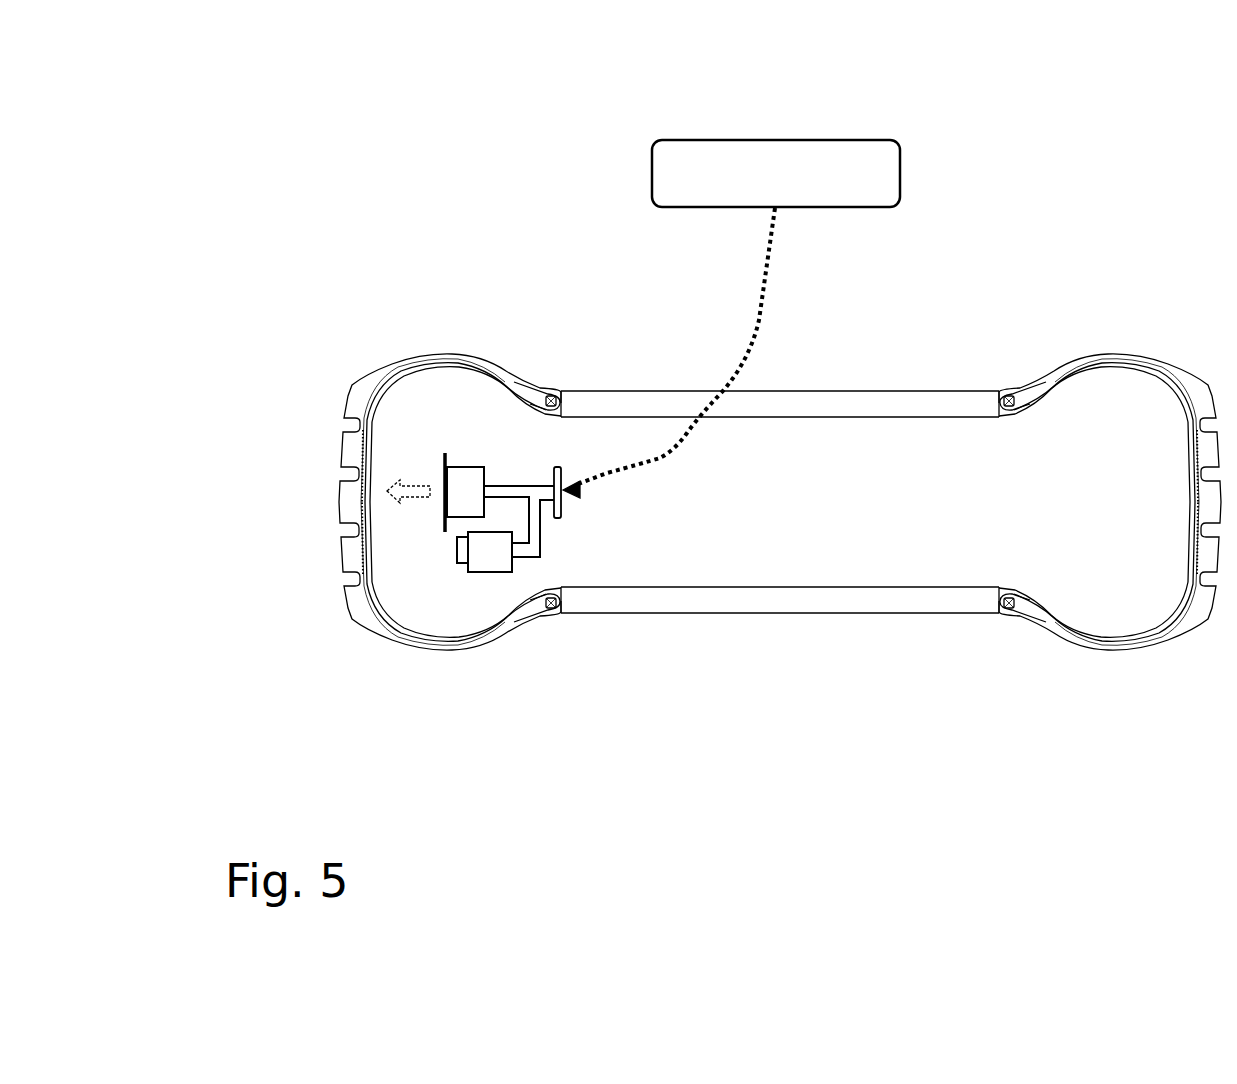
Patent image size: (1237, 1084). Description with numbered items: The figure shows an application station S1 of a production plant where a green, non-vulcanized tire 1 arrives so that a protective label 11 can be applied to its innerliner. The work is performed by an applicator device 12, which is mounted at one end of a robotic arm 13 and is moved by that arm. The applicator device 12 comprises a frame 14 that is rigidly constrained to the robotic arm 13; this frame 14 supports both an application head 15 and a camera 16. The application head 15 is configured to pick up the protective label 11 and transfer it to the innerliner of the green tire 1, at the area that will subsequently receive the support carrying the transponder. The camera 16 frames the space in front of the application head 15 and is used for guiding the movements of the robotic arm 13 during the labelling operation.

The tire 1 is at (834, 661).
The protective label 11 is at (445, 452).
The applicator device 12 is at (456, 597).
The robotic arm 13 is at (830, 272).
The frame 14 is at (539, 552).
The application head 15 is at (465, 495).
The camera 16 is at (491, 552).
The application station S1 is at (304, 143).